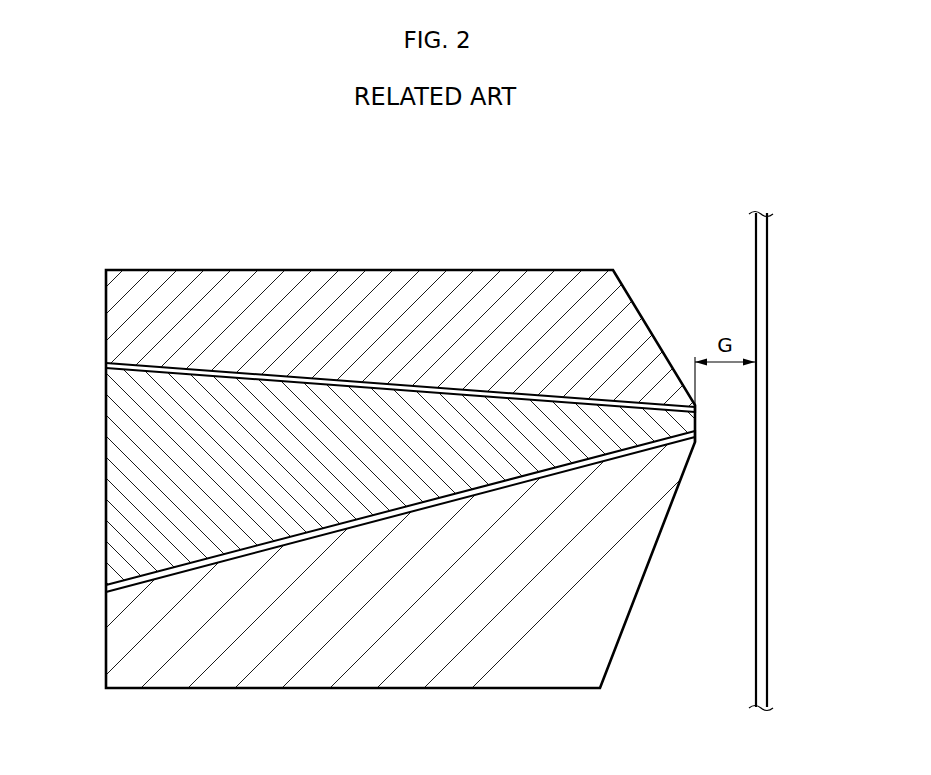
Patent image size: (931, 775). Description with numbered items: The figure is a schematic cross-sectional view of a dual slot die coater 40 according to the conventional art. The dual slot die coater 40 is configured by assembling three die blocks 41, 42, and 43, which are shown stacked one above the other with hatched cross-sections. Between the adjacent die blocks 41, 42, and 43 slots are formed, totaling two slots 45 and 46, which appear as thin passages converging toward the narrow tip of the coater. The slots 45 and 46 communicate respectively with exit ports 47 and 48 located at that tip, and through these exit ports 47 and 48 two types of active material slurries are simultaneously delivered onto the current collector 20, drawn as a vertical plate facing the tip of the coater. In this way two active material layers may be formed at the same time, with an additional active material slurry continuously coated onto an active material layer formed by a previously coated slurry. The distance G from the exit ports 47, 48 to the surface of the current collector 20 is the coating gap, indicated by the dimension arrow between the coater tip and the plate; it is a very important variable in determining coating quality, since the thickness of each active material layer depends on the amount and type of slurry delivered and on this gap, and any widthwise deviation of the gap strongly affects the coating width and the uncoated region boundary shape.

The current collector 20 is at (769, 267).
The dual slot die coater 40 is at (247, 222).
The die block 41 is at (120, 647).
The die block 42 is at (120, 475).
The die block 43 is at (122, 310).
The slot 45 is at (106, 595).
The slot 46 is at (106, 371).
The exit port 47 is at (697, 438).
The exit port 48 is at (697, 409).